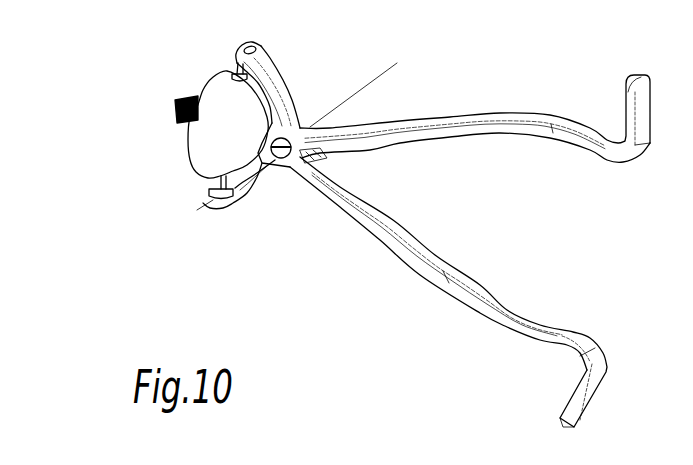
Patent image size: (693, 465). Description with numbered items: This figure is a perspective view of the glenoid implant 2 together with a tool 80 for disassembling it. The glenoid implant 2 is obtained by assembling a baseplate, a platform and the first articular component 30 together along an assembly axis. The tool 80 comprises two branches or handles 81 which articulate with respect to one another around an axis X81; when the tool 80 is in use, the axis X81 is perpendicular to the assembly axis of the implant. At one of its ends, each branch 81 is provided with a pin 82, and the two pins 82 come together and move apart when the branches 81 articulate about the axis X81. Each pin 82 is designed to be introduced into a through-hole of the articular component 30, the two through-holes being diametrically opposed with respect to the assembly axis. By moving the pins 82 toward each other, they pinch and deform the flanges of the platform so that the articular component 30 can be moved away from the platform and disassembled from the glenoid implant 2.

The glenoid implant 2 is at (187, 153).
The first articular component 30 is at (215, 92).
The tool 80 is at (385, 218).
The branches 81 is at (551, 124).
The pin 82 is at (238, 73).
The axis X81 is at (370, 82).